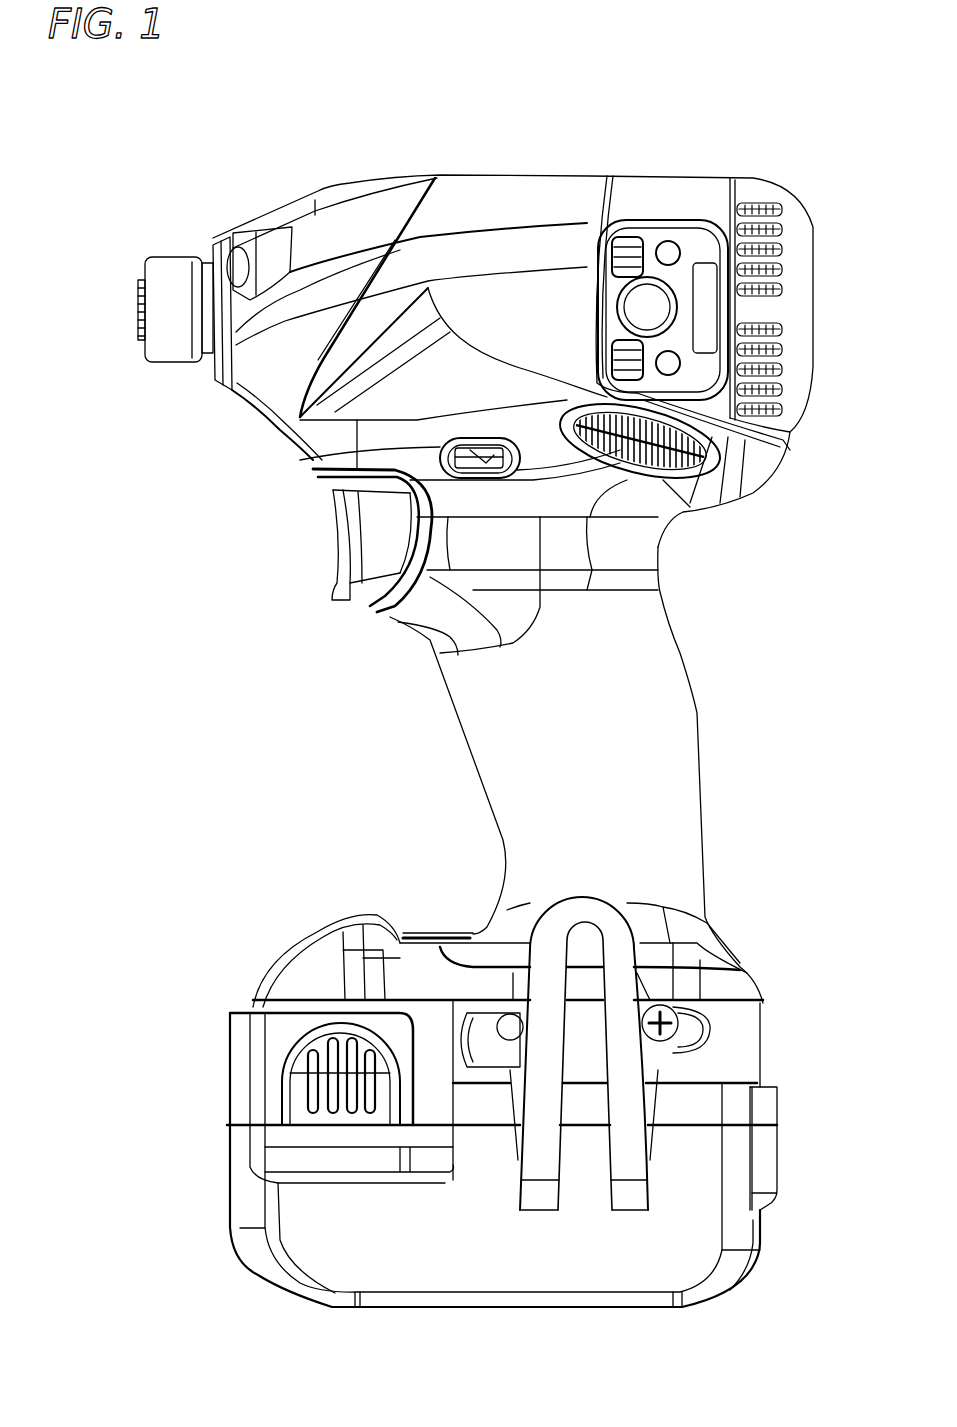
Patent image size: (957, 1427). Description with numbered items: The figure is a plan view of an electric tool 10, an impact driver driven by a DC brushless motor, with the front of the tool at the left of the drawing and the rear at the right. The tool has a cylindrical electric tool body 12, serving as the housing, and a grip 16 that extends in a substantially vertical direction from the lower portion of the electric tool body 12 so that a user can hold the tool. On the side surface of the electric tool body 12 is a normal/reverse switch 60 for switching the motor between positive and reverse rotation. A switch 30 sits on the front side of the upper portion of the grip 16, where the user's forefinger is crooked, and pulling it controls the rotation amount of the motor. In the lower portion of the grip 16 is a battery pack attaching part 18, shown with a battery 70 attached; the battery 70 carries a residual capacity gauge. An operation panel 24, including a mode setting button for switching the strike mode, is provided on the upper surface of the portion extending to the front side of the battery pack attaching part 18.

The electric tool 10 is at (675, 120).
The electric tool body 12 is at (511, 185).
The grip 16 is at (693, 750).
The battery pack attaching part 18 is at (747, 967).
The operation panel 24 is at (423, 933).
The switch 30 is at (347, 540).
The normal/reverse switch 60 is at (327, 465).
The battery 70 is at (737, 1165).